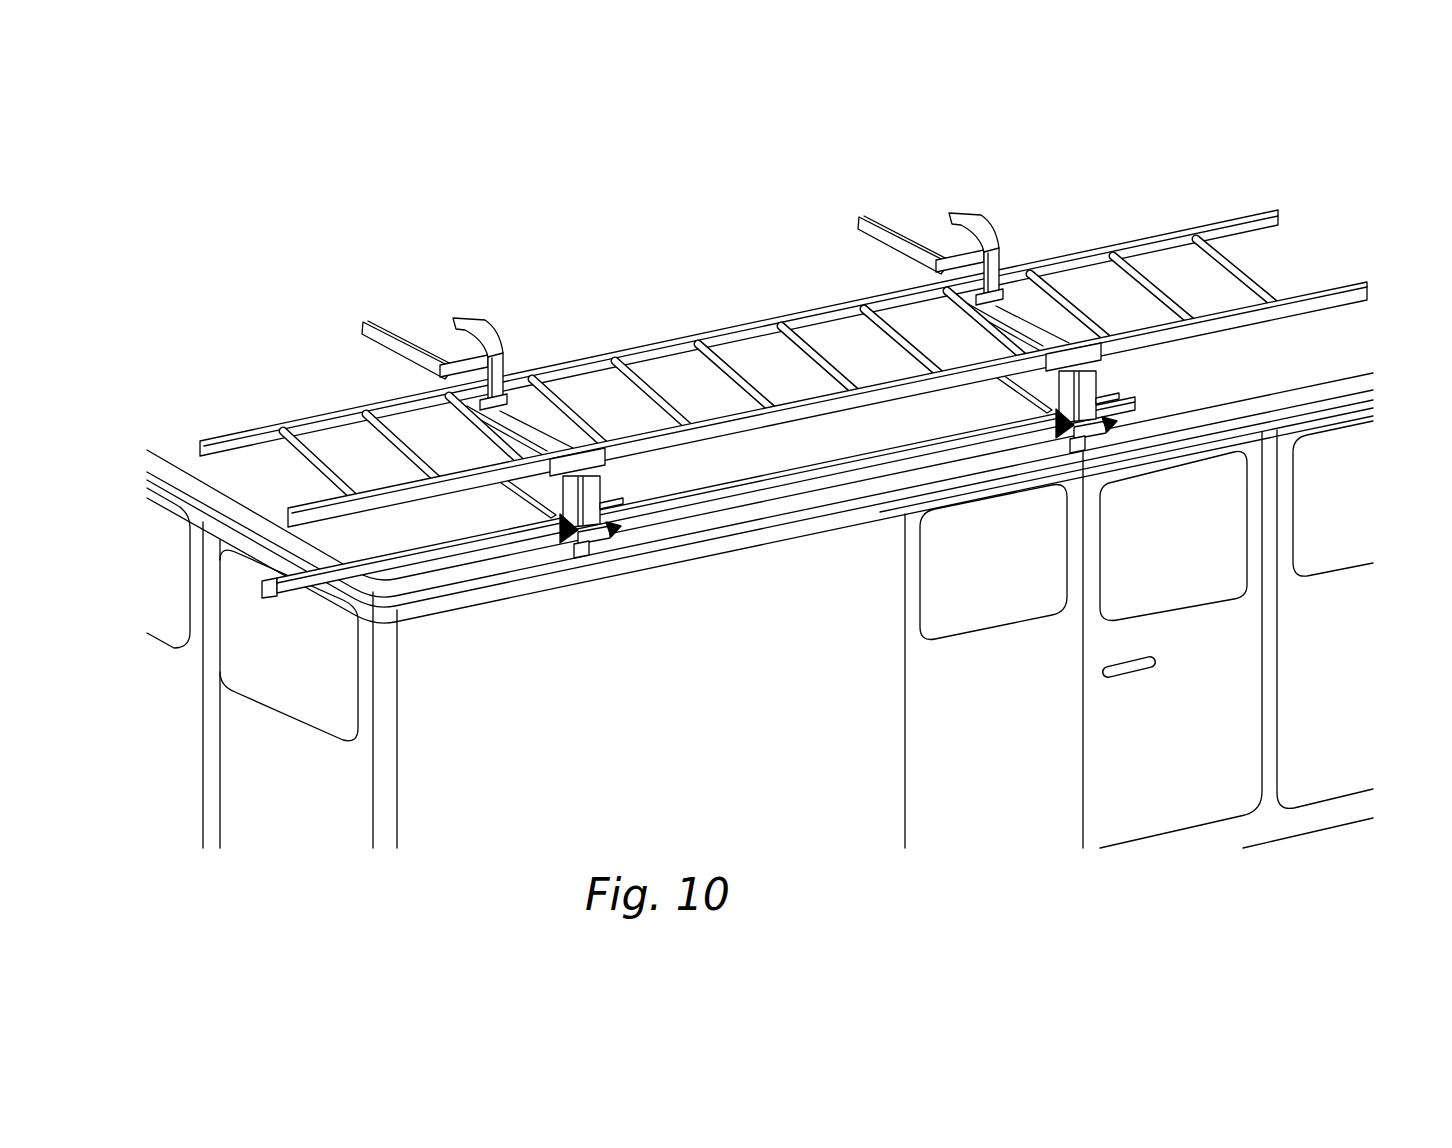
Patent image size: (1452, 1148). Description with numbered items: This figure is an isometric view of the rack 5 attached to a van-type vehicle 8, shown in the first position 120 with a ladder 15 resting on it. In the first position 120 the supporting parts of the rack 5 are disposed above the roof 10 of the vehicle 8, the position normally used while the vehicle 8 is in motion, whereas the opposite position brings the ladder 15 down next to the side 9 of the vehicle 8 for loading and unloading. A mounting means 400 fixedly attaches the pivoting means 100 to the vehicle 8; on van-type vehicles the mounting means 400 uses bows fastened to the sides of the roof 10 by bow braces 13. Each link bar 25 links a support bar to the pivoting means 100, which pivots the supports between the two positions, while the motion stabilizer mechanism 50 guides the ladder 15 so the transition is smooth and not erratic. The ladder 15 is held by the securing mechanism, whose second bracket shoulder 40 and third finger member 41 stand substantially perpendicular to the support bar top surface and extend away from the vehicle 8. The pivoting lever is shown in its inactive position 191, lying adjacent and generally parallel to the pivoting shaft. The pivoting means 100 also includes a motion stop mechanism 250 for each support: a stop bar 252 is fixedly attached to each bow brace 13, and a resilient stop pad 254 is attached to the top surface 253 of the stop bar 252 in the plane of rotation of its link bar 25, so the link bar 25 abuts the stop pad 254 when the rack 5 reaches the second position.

The rack 5 is at (794, 386).
The vehicle 8 is at (773, 587).
The side 9 is at (488, 739).
The roof 10 is at (293, 483).
The bow brace 13 is at (586, 555).
The ladder 15 is at (1313, 230).
The link bar 25 is at (530, 502).
The second bracket shoulder 40 is at (588, 458).
The third finger member 41 is at (771, 274).
The motion stabilizer mechanism 50 is at (487, 305).
The pivoting means 100 is at (1200, 378).
The first position 120 is at (810, 274).
The inactive position 191 is at (537, 537).
The motion stop mechanism 250 is at (873, 495).
The stop bar 252 is at (602, 539).
The top surface 253 is at (594, 512).
The stop pad 254 is at (619, 525).
The mounting means 400 is at (873, 453).